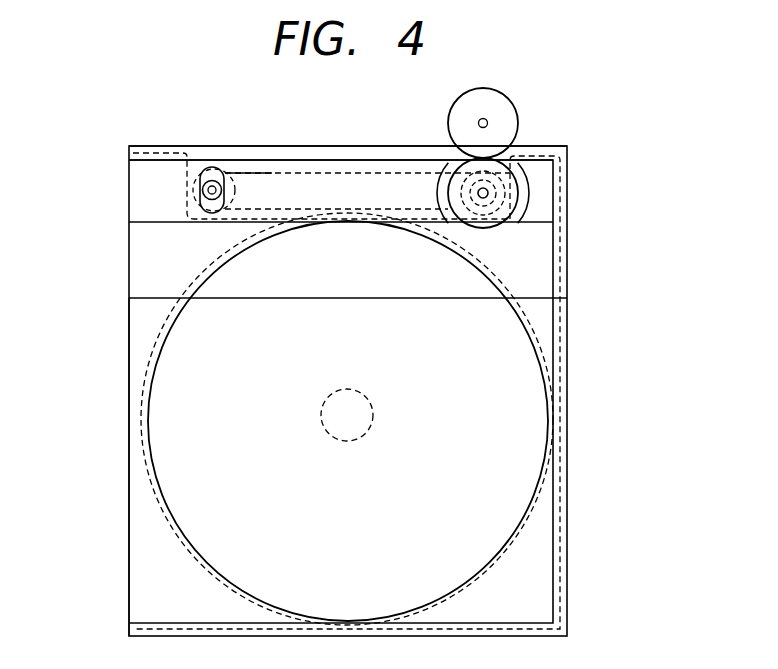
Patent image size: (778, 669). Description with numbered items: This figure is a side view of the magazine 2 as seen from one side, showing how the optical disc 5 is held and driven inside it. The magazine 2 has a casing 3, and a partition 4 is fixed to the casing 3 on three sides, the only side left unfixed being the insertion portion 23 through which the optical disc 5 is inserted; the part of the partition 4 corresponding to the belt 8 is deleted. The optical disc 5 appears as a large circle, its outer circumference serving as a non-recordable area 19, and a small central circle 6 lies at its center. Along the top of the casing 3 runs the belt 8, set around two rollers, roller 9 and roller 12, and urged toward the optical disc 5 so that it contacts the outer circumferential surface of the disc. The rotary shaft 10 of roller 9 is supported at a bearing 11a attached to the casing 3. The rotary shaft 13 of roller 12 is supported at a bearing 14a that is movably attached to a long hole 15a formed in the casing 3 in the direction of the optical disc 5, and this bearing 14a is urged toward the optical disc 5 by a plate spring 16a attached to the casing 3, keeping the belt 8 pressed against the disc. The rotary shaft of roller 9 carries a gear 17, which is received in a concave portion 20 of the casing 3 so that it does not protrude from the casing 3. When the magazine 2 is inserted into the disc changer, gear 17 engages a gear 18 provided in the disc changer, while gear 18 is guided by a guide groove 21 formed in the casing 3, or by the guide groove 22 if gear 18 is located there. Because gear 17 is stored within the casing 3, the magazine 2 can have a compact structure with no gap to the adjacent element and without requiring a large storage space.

The magazine 2 is at (575, 370).
The casing 3 is at (567, 417).
The partition 4 is at (561, 487).
The optical disc 5 is at (160, 407).
The hub 6 is at (320, 414).
The belt 8 is at (313, 173).
The roller 9 is at (480, 208).
The rotary shaft 10 is at (490, 193).
The bearing 11a is at (487, 202).
The roller 12 is at (195, 220).
The rotary shaft 13 is at (202, 181).
The bearing 14a is at (200, 200).
The long hole 15a is at (207, 160).
The plate spring 16a is at (257, 173).
The gear 17 is at (527, 175).
The gear 18 is at (518, 112).
The non-recordable area 19 is at (150, 470).
The concave portion 20 is at (440, 193).
The guide groove 21 is at (366, 160).
The guide groove 22 is at (160, 278).
The insertion portion 23 is at (130, 329).